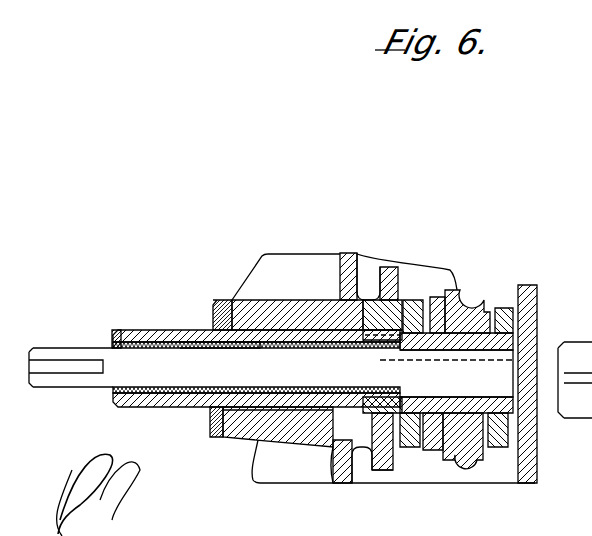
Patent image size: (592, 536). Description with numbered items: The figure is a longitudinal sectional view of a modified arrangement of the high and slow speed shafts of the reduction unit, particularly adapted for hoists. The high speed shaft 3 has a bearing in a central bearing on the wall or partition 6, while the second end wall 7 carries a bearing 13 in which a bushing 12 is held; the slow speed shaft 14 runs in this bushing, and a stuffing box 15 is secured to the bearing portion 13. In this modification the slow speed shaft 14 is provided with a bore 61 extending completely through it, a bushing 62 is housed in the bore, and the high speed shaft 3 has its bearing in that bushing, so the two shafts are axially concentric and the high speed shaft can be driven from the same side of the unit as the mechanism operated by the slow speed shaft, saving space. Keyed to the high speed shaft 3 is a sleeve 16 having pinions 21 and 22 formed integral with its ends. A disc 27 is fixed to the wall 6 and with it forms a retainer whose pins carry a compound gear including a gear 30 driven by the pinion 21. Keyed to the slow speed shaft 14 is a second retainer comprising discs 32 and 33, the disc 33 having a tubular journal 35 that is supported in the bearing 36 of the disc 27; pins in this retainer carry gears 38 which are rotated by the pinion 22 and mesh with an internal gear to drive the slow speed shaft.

The high speed shaft 3 is at (147, 375).
The wall or partition 6 is at (537, 293).
The second end wall 7 is at (343, 255).
The bushing 12 is at (236, 440).
The bearing 13 is at (232, 442).
The slow speed shaft 14 is at (150, 343).
The stuffing box 15 is at (212, 433).
The sleeve 16 is at (466, 389).
The pinion 21 is at (456, 373).
The pinion 22 is at (412, 330).
The disc 27 is at (458, 290).
The gear 30 is at (505, 318).
The disc 32 is at (381, 470).
The disc 33 is at (433, 450).
The tubular journal 35 is at (470, 432).
The bearing 36 is at (480, 310).
The gears 38 is at (414, 447).
The bore 61 is at (182, 346).
The bushing 62 is at (114, 347).